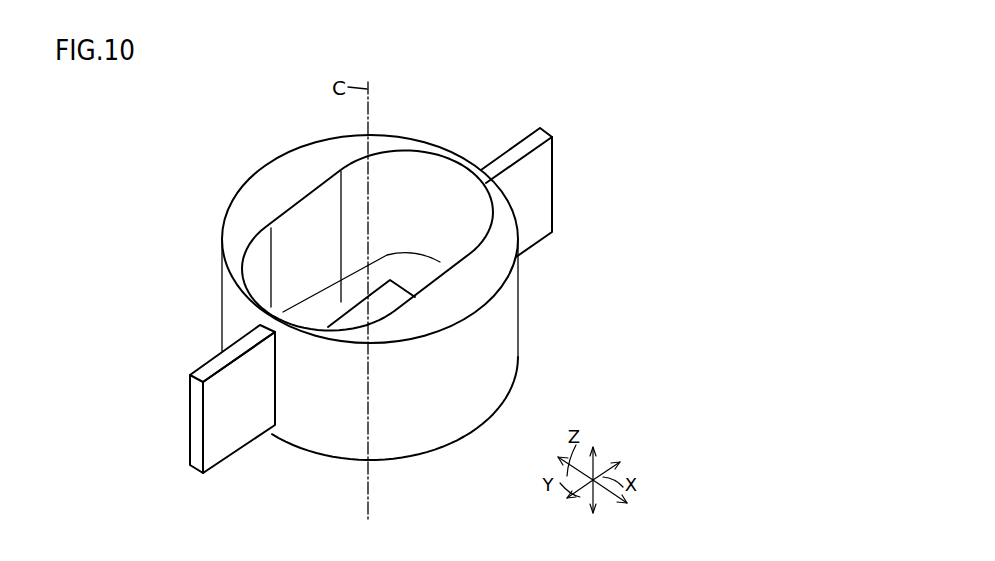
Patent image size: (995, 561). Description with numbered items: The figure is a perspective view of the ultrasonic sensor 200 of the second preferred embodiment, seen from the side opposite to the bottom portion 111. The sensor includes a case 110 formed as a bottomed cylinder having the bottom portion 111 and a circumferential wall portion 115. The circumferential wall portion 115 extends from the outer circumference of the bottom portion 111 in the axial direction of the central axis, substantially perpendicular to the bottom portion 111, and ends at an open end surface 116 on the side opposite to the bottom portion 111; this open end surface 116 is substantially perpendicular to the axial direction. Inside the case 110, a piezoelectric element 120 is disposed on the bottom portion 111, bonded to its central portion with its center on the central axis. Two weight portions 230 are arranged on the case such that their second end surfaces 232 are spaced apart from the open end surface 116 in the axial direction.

The ultrasonic sensor 200 is at (629, 129).
The case 110 is at (410, 297).
The bottom portion 111 is at (327, 305).
The circumferential wall portion 115 is at (465, 368).
The open end surface 116 is at (470, 293).
The piezoelectric element 120 is at (384, 295).
The weight portions 230 is at (380, 315).
The second end surfaces 232 is at (213, 372).